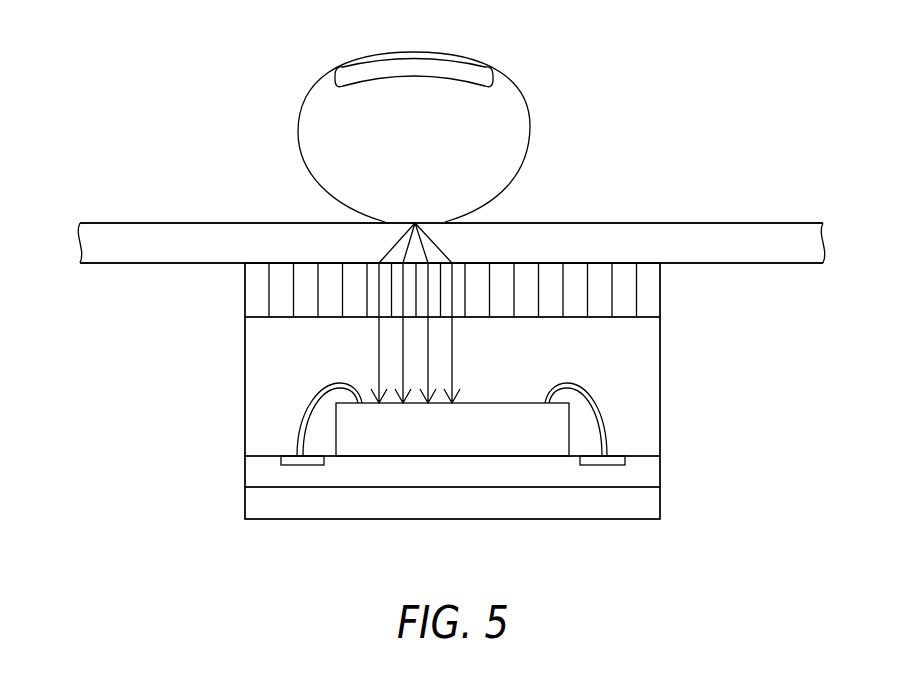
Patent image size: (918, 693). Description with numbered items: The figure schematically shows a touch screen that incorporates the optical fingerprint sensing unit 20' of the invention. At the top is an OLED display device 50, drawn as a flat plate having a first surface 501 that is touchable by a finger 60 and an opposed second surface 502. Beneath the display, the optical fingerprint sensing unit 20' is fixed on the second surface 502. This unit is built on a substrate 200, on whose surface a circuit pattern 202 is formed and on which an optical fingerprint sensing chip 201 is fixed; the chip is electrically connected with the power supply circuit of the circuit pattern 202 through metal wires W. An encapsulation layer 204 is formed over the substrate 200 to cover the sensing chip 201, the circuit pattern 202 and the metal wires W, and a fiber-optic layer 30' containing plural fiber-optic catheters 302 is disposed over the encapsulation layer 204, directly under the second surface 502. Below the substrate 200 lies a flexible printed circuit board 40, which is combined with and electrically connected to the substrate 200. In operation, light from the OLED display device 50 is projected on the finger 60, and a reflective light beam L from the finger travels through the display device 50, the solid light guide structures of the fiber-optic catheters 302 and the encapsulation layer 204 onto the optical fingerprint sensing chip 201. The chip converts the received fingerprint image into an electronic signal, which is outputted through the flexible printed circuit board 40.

The finger 60 is at (313, 135).
The OLED display device 50 is at (656, 241).
The first surface 501 is at (766, 222).
The second surface 502 is at (793, 265).
The fiber-optic layer 30' is at (503, 290).
The fiber-optic catheters 302 is at (258, 283).
The optical fingerprint sensing unit 20' is at (349, 391).
The encapsulation layer 204 is at (645, 372).
The substrate 200 is at (645, 477).
The flexible printed circuit board 40 is at (650, 508).
The optical fingerprint sensing chip 201 is at (443, 440).
The circuit pattern 202 is at (297, 465).
The metal wires W is at (300, 432).
The reflective light beam L is at (443, 248).